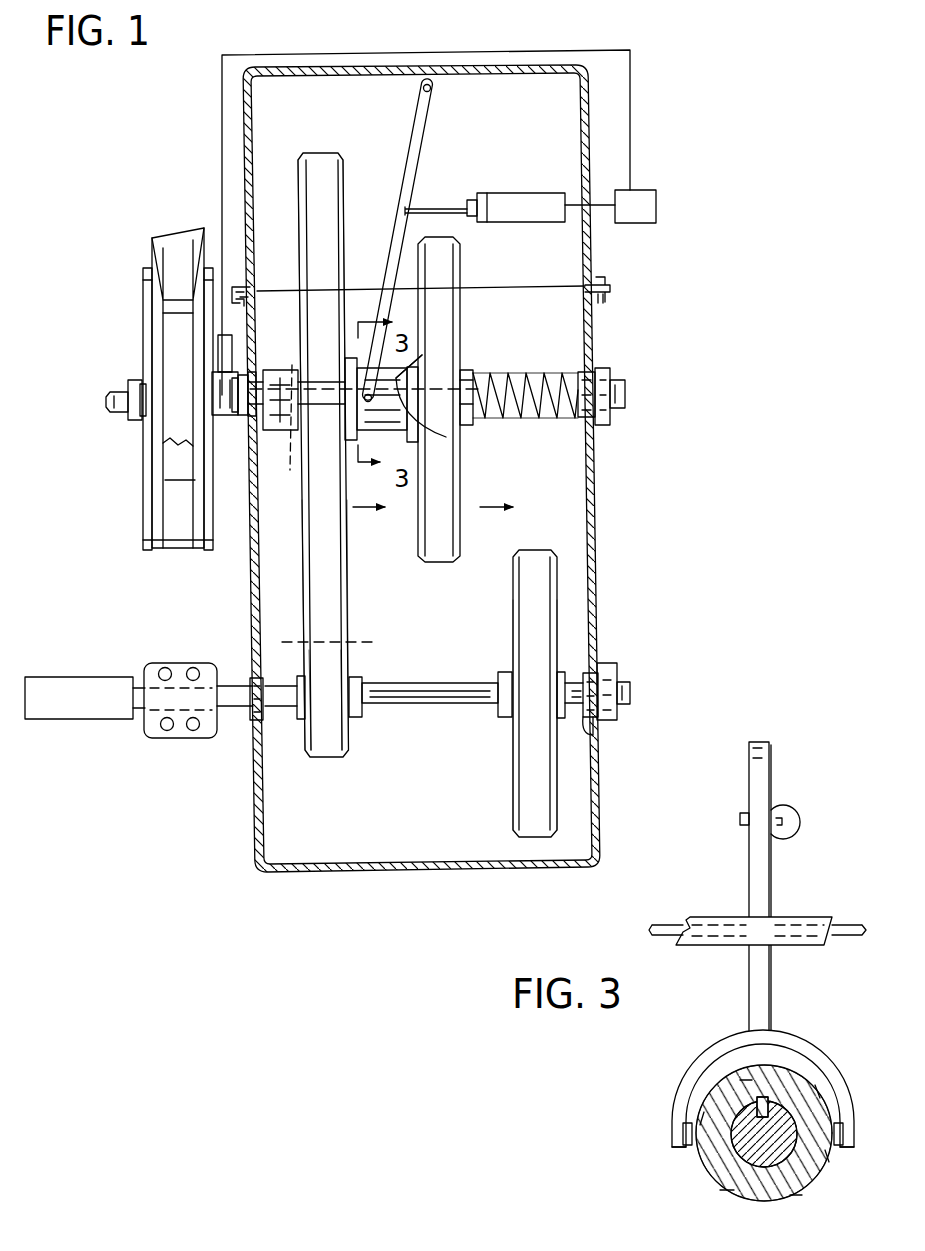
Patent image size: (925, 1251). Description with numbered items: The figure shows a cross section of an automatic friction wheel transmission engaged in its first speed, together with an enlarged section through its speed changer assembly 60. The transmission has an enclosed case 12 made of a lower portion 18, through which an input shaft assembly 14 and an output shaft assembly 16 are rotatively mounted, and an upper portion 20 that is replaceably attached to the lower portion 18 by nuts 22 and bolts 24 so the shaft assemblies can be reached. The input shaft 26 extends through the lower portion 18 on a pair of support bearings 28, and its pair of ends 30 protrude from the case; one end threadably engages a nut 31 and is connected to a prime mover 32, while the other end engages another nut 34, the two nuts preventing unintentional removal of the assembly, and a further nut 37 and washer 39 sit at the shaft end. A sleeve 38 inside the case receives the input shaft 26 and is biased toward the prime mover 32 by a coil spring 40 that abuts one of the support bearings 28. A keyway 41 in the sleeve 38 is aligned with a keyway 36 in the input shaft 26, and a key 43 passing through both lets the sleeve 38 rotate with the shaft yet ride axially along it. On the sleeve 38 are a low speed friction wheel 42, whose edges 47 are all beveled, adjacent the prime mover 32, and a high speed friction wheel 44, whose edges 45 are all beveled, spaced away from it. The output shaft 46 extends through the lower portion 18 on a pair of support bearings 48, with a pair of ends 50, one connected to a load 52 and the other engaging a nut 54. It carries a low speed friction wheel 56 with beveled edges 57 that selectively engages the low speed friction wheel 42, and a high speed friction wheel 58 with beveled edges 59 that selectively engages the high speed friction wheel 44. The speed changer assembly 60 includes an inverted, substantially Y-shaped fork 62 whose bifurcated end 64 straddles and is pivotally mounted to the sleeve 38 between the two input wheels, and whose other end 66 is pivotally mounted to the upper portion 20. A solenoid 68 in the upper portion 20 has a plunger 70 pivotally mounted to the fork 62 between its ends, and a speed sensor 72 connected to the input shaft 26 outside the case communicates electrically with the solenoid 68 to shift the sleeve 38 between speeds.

In FIG. 1, the enclosed case 12 is at (250, 766).
In FIG. 1, the input shaft assembly 14 is at (265, 345).
In FIG. 1, the output shaft assembly 16 is at (432, 680).
In FIG. 1, the lower portion of enclosed case 18 is at (257, 806).
In FIG. 1, the upper portion of enclosed case 20 is at (590, 229).
In FIG. 1, the nuts of enclosed case 22 is at (248, 300).
In FIG. 1, the bolts of enclosed case 24 is at (240, 288).
In FIG. 1, the input shaft 26 is at (497, 378).
In FIG. 3, the input shaft 26 is at (735, 1158).
In FIG. 1, the pair of support bearings of input shaft assembly 28 is at (248, 425).
In FIG. 1, the pair of ends of input shaft 30 is at (246, 418).
In FIG. 1, the nut of input shaft assembly 31 is at (240, 420).
In FIG. 1, the prime mover 32 is at (143, 320).
In FIG. 1, the another nut of input shaft assembly 34 is at (607, 370).
In FIG. 1, the keyway in input shaft 36 is at (276, 432).
In FIG. 3, the keyway in input shaft 36 is at (802, 1152).
In FIG. 1, the nut of shaft assembly 37 is at (110, 398).
In FIG. 1, the sleeve 38 is at (290, 472).
In FIG. 3, the sleeve 38 is at (790, 1195).
In FIG. 1, the washer of shaft assembly 39 is at (140, 385).
In FIG. 1, the coil spring 40 is at (527, 378).
In FIG. 1, the keyway in sleeve 41 is at (420, 352).
In FIG. 3, the keyway in sleeve 41 is at (757, 1106).
In FIG. 1, the low speed friction wheel of input shaft assembly 42 is at (320, 150).
In FIG. 1, the key 43 is at (276, 367).
In FIG. 1, the high speed friction wheel of input shaft assembly 44 is at (443, 558).
In FIG. 1, the beveled edges of high speed friction wheel 44 45 is at (418, 523).
In FIG. 1, the output shaft 46 is at (414, 708).
In FIG. 1, the beveled edges of low speed friction wheel 42 47 is at (299, 183).
In FIG. 1, the pair of support bearings of output shaft assembly 48 is at (250, 682).
In FIG. 1, the pair of ends of output shaft 50 is at (143, 678).
In FIG. 1, the load 52 is at (60, 710).
In FIG. 1, the nut of output shaft assembly 54 is at (605, 663).
In FIG. 1, the low speed friction wheel of output shaft assembly 56 is at (335, 758).
In FIG. 1, the beveled edges of low speed friction wheel 56 57 is at (305, 736).
In FIG. 1, the high speed friction wheel of output shaft assembly 58 is at (535, 838).
In FIG. 1, the beveled edges of high speed friction wheel 58 59 is at (512, 760).
In FIG. 1, the speed changer assembly 60 is at (430, 268).
In FIG. 3, the speed changer assembly 60 is at (764, 928).
In FIG. 1, the fork 62 is at (419, 148).
In FIG. 3, the fork 62 is at (749, 845).
In FIG. 1, the bifurcated end of fork 64 is at (432, 407).
In FIG. 3, the bifurcated end of fork 64 is at (812, 1040).
In FIG. 1, the other end of fork 66 is at (436, 85).
In FIG. 3, the other end of fork 66 is at (770, 747).
In FIG. 1, the solenoid 68 is at (526, 193).
In FIG. 3, the solenoid 68 is at (786, 805).
In FIG. 1, the plunger of solenoid 70 is at (439, 208).
In FIG. 3, the plunger of solenoid 70 is at (781, 822).
In FIG. 1, the speed sensor 72 is at (218, 350).